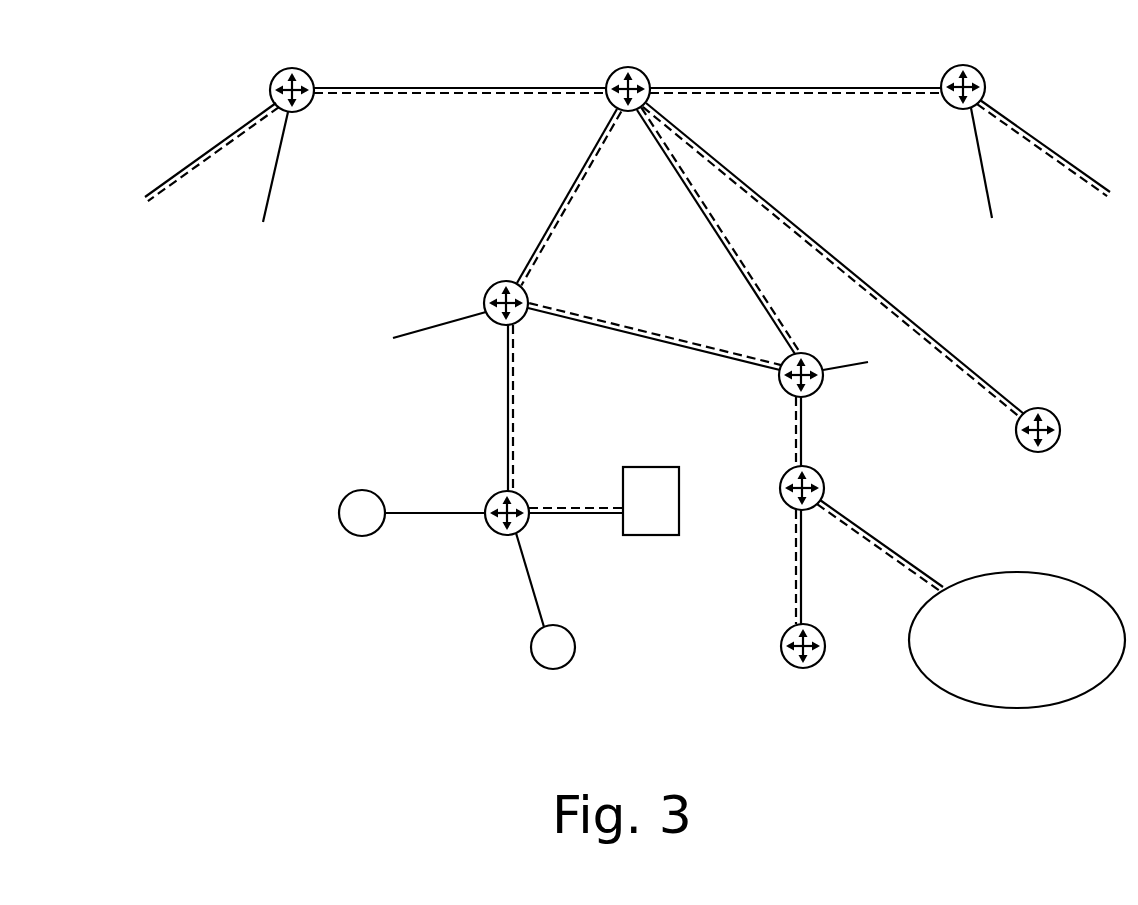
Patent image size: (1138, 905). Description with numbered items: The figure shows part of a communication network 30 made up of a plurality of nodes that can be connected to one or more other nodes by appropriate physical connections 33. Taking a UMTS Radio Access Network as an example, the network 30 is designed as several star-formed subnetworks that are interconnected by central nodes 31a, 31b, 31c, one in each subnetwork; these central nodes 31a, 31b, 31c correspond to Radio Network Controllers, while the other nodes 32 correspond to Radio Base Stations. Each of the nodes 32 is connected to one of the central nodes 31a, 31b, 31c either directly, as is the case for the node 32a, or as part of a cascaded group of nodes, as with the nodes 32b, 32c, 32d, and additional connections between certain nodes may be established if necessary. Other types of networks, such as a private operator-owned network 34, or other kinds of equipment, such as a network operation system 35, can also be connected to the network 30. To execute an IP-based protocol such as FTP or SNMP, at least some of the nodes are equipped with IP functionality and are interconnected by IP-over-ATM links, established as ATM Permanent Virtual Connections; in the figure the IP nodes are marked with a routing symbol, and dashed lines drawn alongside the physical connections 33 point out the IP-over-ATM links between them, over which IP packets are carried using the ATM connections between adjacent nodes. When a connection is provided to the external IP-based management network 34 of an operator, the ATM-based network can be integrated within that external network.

The communication network 30 is at (72, 419).
The central node 31a is at (627, 64).
The central node 31b is at (295, 66).
The central node 31c is at (958, 63).
The node 32 is at (478, 300).
The node 32a is at (1038, 406).
The node 32b is at (828, 390).
The node 32c is at (813, 522).
The node 32d is at (832, 668).
The physical connection 33 is at (252, 217).
The private operator-owned network 34 is at (1038, 560).
The network operation system 35 is at (650, 457).